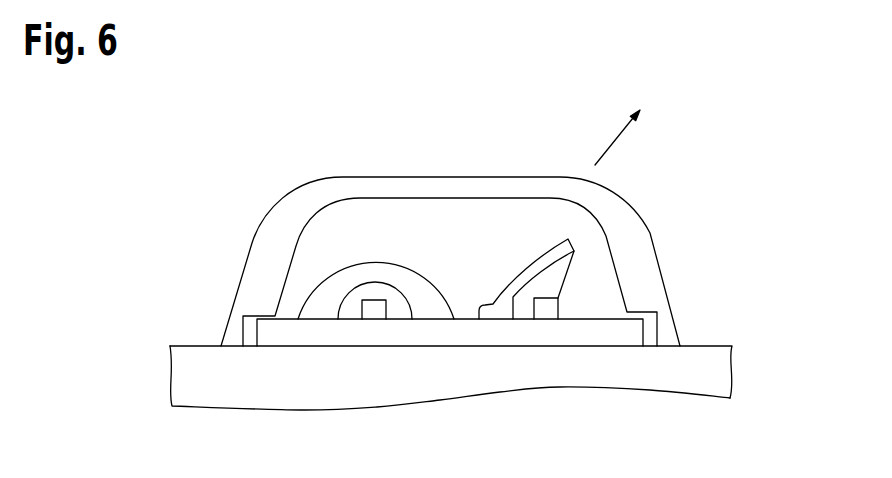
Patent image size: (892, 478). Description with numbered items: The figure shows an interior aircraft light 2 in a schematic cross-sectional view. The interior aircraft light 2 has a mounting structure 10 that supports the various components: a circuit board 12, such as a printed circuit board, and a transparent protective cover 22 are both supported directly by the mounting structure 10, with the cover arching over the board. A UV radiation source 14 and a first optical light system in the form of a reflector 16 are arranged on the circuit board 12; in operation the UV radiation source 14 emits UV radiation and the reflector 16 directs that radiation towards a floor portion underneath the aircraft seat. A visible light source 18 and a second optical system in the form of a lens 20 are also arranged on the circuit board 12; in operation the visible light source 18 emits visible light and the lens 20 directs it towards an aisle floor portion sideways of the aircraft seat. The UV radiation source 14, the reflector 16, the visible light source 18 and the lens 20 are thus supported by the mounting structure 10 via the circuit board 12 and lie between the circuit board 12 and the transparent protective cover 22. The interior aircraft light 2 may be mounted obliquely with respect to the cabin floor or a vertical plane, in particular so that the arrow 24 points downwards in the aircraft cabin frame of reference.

The interior aircraft light 2 is at (461, 280).
The mounting structure 10 is at (681, 370).
The circuit board 12 is at (295, 338).
The UV radiation source 14 is at (540, 345).
The reflector 16 is at (490, 345).
The visible light source 18 is at (372, 313).
The lens 20 is at (303, 290).
The transparent protective cover 22 is at (652, 287).
The arrow 24 is at (613, 140).